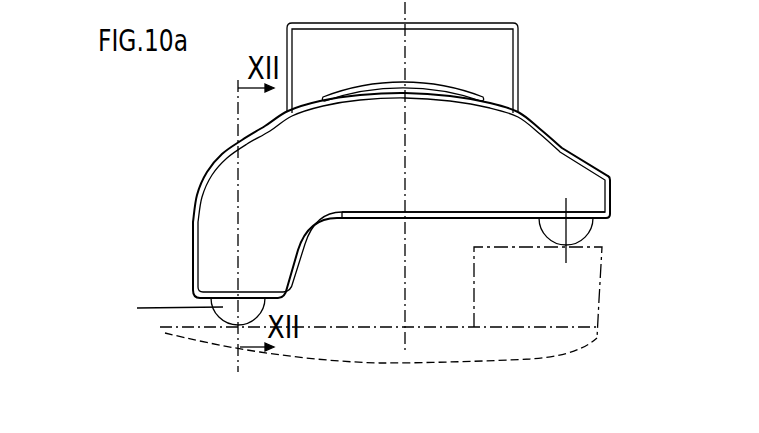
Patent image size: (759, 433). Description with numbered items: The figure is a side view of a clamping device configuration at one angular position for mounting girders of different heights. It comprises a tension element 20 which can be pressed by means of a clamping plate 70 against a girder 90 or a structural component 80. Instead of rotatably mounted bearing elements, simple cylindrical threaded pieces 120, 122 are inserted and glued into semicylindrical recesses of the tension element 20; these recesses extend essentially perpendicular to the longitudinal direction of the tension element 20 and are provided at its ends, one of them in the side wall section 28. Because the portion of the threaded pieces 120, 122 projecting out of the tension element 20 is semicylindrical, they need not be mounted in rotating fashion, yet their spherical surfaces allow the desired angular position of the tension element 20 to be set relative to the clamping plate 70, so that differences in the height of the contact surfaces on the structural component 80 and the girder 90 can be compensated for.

The tension element 20 is at (531, 147).
The clamping plate 70 is at (500, 67).
The side wall section 28 is at (571, 213).
The threaded piece 120 is at (233, 290).
The threaded piece 122 is at (578, 230).
The structural component 80 is at (596, 271).
The girder 90 is at (590, 342).